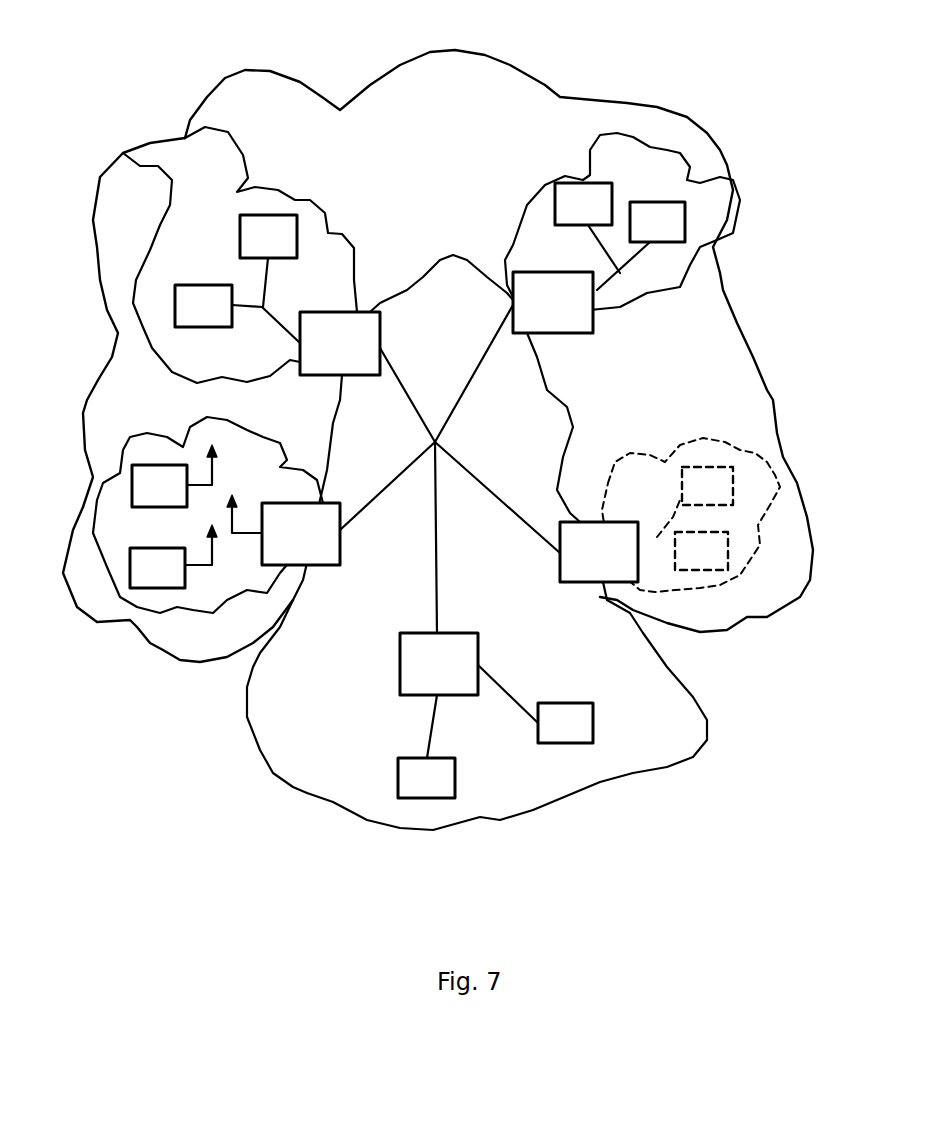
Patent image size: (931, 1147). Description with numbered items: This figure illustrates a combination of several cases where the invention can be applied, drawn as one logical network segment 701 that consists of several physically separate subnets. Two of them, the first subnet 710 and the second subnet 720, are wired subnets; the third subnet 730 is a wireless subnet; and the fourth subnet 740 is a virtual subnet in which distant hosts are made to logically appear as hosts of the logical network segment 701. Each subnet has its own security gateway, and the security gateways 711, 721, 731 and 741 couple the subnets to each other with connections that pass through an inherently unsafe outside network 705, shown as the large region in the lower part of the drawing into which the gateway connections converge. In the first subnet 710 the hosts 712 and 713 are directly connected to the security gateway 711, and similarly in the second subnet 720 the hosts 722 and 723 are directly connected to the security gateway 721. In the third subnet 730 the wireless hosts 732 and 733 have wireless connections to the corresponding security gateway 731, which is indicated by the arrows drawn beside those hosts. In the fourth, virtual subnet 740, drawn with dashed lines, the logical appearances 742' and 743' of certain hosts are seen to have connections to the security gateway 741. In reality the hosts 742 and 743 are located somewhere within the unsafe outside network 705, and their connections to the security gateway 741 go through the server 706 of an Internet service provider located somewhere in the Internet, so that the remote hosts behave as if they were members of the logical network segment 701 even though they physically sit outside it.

The logical network segment 701 is at (438, 342).
The outside network 705 is at (477, 550).
The server 706 is at (449, 639).
The first subnet 710 is at (230, 240).
The security gateway 711 is at (374, 343).
The host 712 is at (226, 185).
The host 713 is at (170, 250).
The second subnet 720 is at (647, 221).
The security gateway 721 is at (565, 326).
The host 722 is at (609, 169).
The host 723 is at (691, 246).
The third subnet 730 is at (195, 558).
The security gateway 731 is at (297, 552).
The wireless host 732 is at (121, 472).
The wireless host 733 is at (173, 626).
The fourth subnet 740 is at (737, 515).
The security gateway 741 is at (588, 573).
The host 742 is at (424, 787).
The host 743 is at (559, 756).
The logical appearance of host 742' is at (760, 455).
The logical appearance of host 743' is at (776, 551).